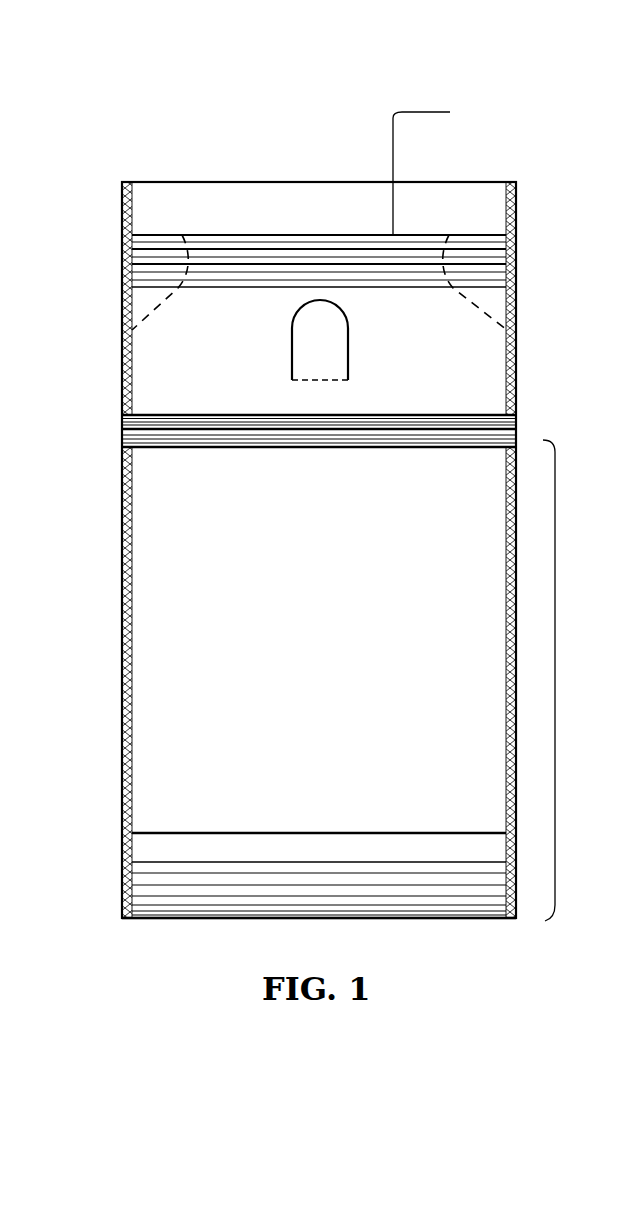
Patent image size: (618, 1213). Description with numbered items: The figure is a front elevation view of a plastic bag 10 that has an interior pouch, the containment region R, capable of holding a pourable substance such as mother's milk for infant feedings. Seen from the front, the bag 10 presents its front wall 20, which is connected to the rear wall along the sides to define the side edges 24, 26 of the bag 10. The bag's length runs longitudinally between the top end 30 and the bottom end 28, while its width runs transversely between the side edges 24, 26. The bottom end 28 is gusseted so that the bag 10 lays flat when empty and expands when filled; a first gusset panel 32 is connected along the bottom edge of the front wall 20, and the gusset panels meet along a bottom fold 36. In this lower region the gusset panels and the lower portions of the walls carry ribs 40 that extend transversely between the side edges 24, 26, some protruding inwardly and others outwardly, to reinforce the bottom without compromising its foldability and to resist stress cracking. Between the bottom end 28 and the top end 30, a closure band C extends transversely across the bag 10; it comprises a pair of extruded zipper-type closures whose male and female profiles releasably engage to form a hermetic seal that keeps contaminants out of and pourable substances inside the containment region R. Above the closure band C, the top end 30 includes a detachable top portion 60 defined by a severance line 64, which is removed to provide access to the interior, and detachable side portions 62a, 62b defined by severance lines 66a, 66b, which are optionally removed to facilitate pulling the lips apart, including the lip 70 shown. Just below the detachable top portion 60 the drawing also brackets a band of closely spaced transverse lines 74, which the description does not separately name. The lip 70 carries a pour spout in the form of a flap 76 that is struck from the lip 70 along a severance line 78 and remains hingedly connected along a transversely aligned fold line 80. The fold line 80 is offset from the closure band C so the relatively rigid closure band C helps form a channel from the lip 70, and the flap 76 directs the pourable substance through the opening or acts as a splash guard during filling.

The plastic bag 10 is at (134, 76).
The front wall 20 is at (332, 560).
The side edge 24 is at (122, 600).
The side edge 26 is at (507, 600).
The bottom end 28 is at (440, 968).
The top end 30 is at (273, 174).
The first gusset panel 32 is at (607, 792).
The bottom fold 36 is at (313, 833).
The ribs 40 is at (106, 858).
The detachable top portion 60 is at (327, 214).
The detachable side portion 62a is at (132, 316).
The detachable side portion 62b is at (483, 298).
The severance line 64 is at (435, 172).
The severance line 66a is at (153, 310).
The severance line 66b is at (505, 328).
The lip 70 is at (255, 323).
The perforation lines 74 is at (106, 235).
The flap 76 is at (332, 346).
The severance line 78 is at (348, 352).
The fold line 80 is at (320, 382).
The closure band C is at (245, 462).
The containment region R is at (560, 680).